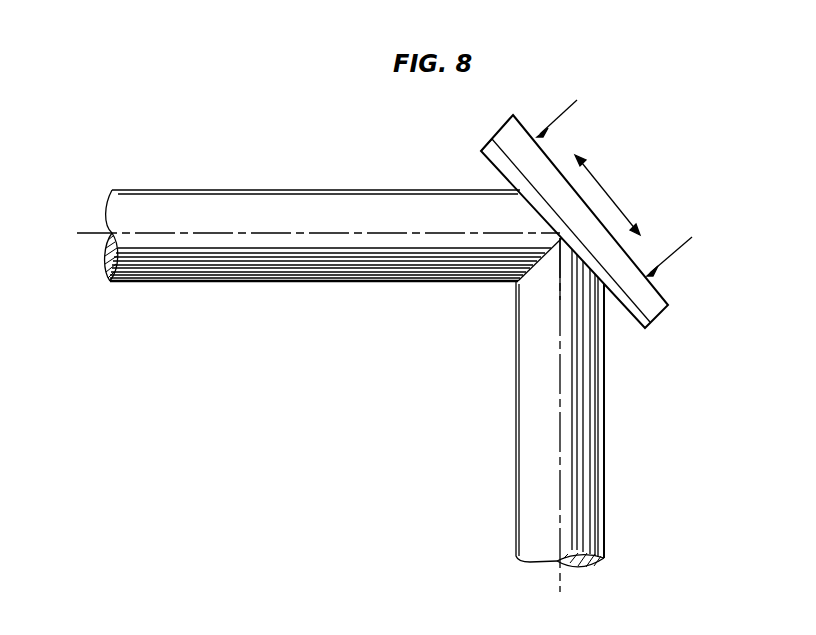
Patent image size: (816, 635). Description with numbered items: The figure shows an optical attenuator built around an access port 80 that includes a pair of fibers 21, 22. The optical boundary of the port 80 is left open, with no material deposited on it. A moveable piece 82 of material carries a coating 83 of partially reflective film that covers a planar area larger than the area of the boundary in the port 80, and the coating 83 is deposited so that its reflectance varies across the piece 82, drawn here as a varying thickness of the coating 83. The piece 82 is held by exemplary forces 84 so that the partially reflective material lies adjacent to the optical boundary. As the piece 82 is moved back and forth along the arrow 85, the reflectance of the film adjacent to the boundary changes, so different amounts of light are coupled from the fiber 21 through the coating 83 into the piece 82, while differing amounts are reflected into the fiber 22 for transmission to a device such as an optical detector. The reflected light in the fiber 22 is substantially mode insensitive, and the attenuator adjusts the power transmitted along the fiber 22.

The access port 80 is at (392, 349).
The fiber 21 is at (205, 258).
The fiber 22 is at (530, 482).
The moveable piece 82 is at (652, 302).
The coating 83 is at (490, 152).
The forces 84 is at (568, 112).
The arrow 85 is at (607, 195).